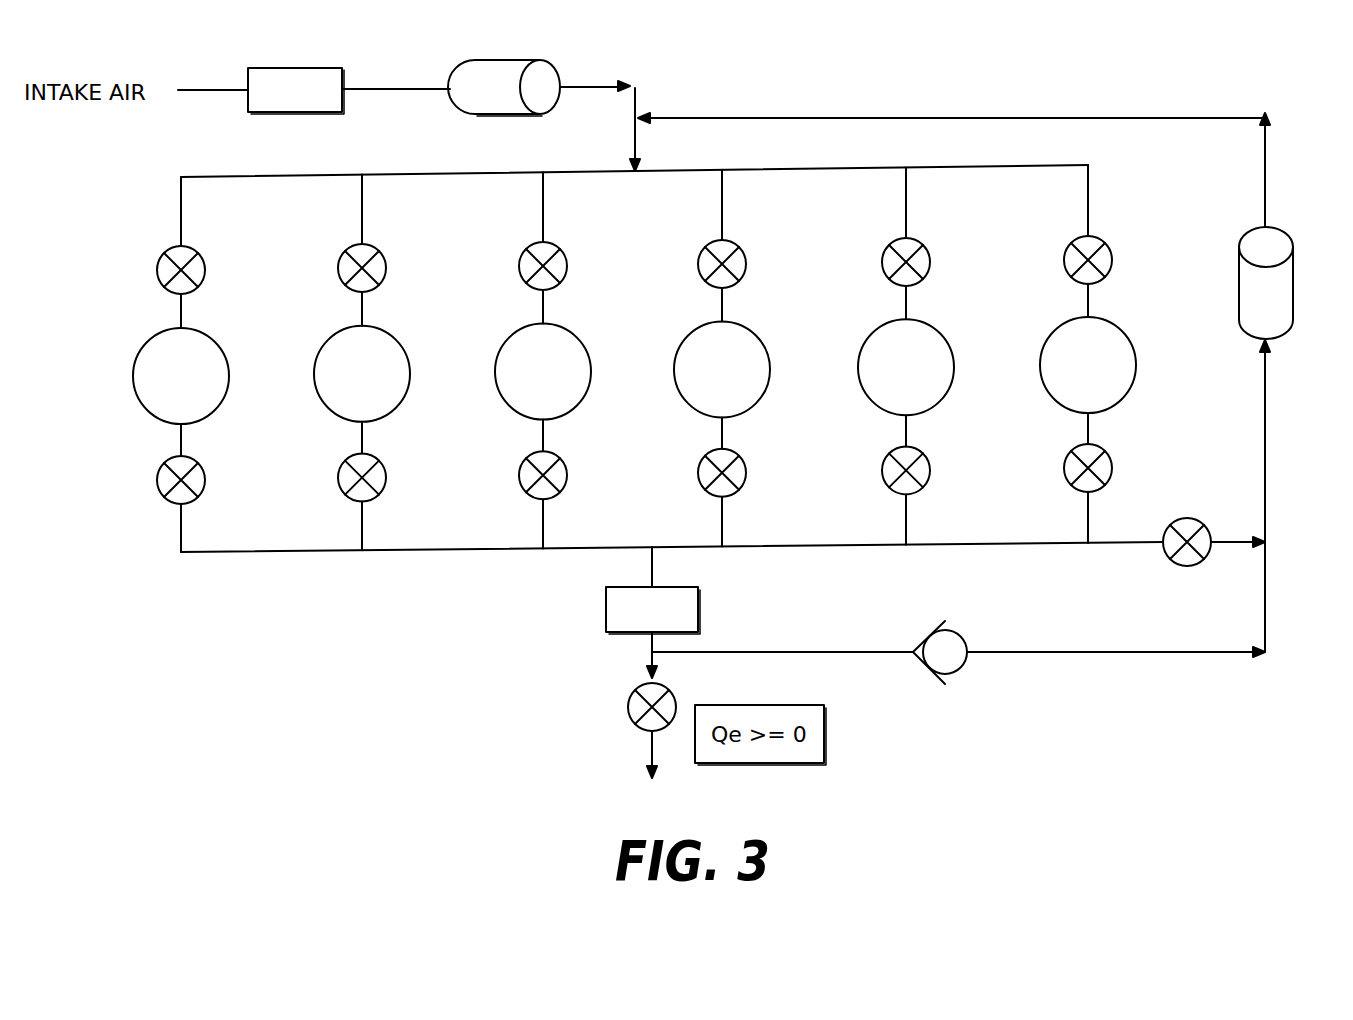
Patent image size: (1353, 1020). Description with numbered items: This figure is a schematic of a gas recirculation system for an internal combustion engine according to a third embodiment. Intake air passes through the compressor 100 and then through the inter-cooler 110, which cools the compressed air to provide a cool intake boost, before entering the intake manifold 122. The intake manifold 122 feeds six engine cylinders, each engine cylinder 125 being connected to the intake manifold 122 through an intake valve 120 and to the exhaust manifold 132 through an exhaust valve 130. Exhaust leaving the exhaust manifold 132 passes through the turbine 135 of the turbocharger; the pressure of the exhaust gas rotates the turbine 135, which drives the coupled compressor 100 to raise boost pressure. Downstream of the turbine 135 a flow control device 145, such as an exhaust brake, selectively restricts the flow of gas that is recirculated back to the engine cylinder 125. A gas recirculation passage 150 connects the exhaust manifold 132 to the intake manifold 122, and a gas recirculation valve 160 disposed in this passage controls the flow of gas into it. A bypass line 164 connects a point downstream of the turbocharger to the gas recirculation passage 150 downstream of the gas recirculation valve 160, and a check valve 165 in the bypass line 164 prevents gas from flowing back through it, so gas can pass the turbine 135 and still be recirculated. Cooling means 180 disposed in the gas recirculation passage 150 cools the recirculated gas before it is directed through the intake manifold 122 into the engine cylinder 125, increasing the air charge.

The compressor 100 is at (287, 117).
The inter-cooler 110 is at (496, 117).
The intake valve 120 is at (158, 268).
The intake manifold 122 is at (618, 172).
The engine cylinder 125 is at (135, 375).
The exhaust valve 130 is at (160, 480).
The exhaust manifold 132 is at (427, 552).
The turbocharger turbine 135 is at (606, 614).
The flow control device 145 is at (628, 706).
The gas recirculation passage 150 is at (1063, 117).
The gas recirculation valve 160 is at (1183, 567).
The bypass line 164 is at (1100, 655).
The check valve 165 is at (967, 667).
The cooling means 180 is at (1293, 270).